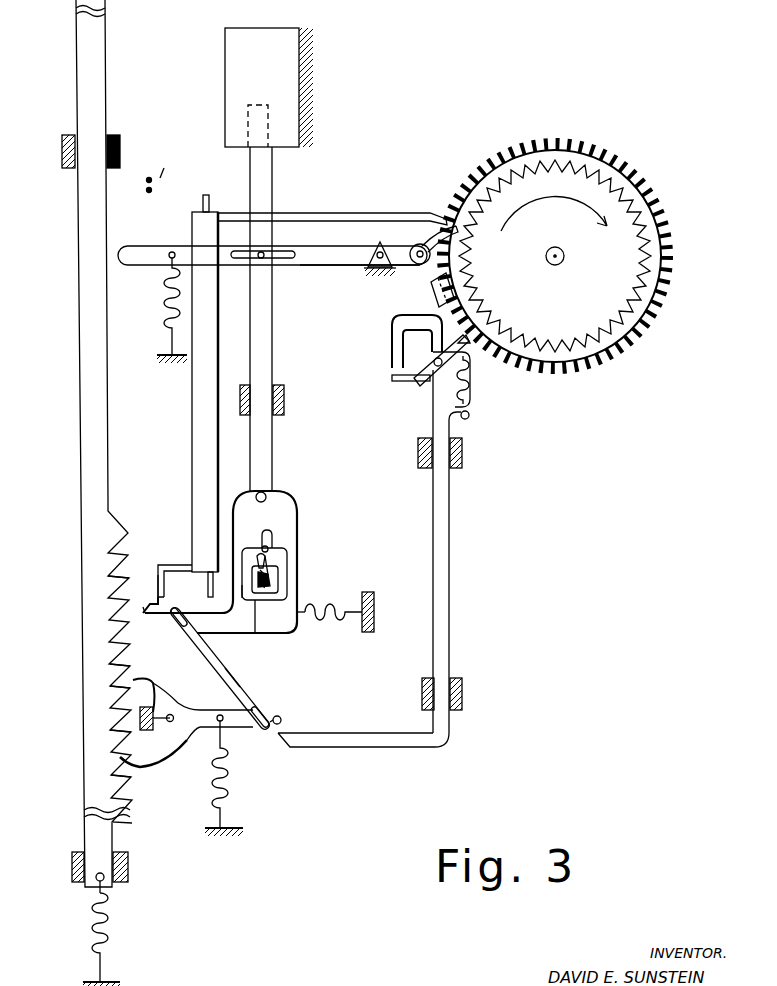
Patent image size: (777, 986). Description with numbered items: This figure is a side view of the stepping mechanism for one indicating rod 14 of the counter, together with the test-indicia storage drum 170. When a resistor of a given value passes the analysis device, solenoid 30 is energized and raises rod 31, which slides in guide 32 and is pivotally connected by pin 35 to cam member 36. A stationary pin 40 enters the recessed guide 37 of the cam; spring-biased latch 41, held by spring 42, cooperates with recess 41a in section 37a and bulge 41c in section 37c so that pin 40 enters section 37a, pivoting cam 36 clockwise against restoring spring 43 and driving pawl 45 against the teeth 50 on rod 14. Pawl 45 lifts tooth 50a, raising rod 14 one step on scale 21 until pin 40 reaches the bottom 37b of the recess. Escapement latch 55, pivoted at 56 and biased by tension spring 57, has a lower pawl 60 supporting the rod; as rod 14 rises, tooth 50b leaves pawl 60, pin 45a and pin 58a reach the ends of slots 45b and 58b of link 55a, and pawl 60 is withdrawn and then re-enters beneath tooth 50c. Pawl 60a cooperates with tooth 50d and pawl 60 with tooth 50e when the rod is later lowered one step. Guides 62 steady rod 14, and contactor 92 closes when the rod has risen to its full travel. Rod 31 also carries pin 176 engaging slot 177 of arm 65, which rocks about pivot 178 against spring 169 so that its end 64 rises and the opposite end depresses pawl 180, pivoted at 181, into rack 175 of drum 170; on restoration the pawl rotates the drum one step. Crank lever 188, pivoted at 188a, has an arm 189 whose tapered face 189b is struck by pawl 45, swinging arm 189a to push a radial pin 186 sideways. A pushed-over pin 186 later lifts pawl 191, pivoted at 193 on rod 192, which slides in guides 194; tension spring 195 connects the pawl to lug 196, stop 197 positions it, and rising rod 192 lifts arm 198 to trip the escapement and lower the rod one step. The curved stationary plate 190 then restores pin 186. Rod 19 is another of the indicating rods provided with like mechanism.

The indicating rod 14 is at (80, 241).
The rod 19 is at (82, 983).
The scale 21 is at (262, 575).
The solenoid 30 is at (225, 58).
The rod 31 is at (266, 192).
The guide 32 is at (285, 400).
The pin 35 is at (266, 494).
The cam member 36 is at (284, 512).
The recessed guide 37 is at (279, 597).
The recess section 37a is at (278, 560).
The recess bottom 37b is at (262, 600).
The recess section 37c is at (248, 585).
The stationary pin 40 is at (268, 547).
The latch 41 is at (258, 560).
The recess 41a is at (289, 610).
The bulge 41c is at (258, 570).
The spring 42 is at (258, 582).
The restoring spring 43 is at (342, 616).
The pawl 45 is at (145, 601).
The pin 45a is at (184, 622).
The slot 45b is at (186, 628).
The teeth 50 is at (85, 606).
The tooth 50a is at (114, 577).
The tooth 50b is at (116, 735).
The tooth 50c is at (116, 768).
The tooth 50d is at (116, 663).
The tooth 50e is at (116, 706).
The escapement latch 55 is at (178, 707).
The link 55a is at (244, 683).
The pivot 56 is at (172, 722).
The tension spring 57 is at (228, 776).
The pin 58a is at (264, 715).
The slot 58b is at (281, 720).
The lower pawl member 60 is at (155, 765).
The pawl 60a is at (156, 672).
The guides 62 is at (110, 138).
The arm end 64 is at (185, 252).
The arm 65 is at (355, 265).
The contactor 92 is at (148, 177).
The spring 169 is at (165, 310).
The drum 170 is at (627, 236).
The rack 175 is at (652, 314).
The pin 176 is at (264, 252).
The slot 177 is at (290, 260).
The pivot 178 is at (378, 246).
The pawl 180 is at (418, 246).
The pivot 181 is at (426, 239).
The pin 186 is at (658, 283).
The crank lever 188 is at (192, 230).
The pivot 188a is at (208, 195).
The lever arm 189 is at (158, 565).
The lever arm 189a is at (293, 216).
The tapered face 189b is at (158, 590).
The curved stationary plate 190 is at (431, 290).
The pawl 191 is at (460, 346).
The rod 192 is at (447, 598).
The pivot 193 is at (417, 382).
The guides 194 is at (460, 462).
The tension spring 195 is at (468, 388).
The lug 196 is at (468, 418).
The stop 197 is at (392, 345).
The arm 198 is at (378, 742).